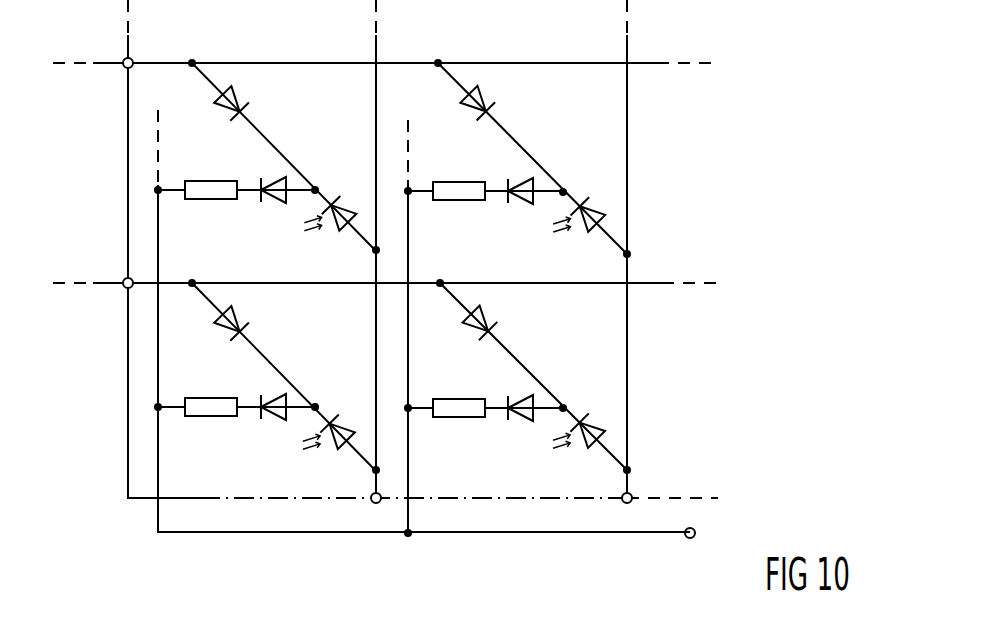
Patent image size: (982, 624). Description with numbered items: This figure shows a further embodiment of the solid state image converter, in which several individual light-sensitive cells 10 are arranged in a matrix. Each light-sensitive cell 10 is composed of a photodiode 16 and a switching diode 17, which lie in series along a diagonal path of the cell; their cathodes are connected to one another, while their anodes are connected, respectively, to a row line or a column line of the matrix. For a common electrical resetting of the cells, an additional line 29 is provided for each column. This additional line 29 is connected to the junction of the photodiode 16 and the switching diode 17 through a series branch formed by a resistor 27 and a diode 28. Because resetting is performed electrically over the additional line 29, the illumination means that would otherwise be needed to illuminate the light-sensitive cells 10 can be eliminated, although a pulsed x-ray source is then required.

The light-sensitive cell 10 is at (598, 97).
The photodiode 16 is at (586, 200).
The switching diode 17 is at (484, 106).
The resistor 27 is at (462, 201).
The diode 28 is at (523, 203).
The additional line 29 is at (197, 532).